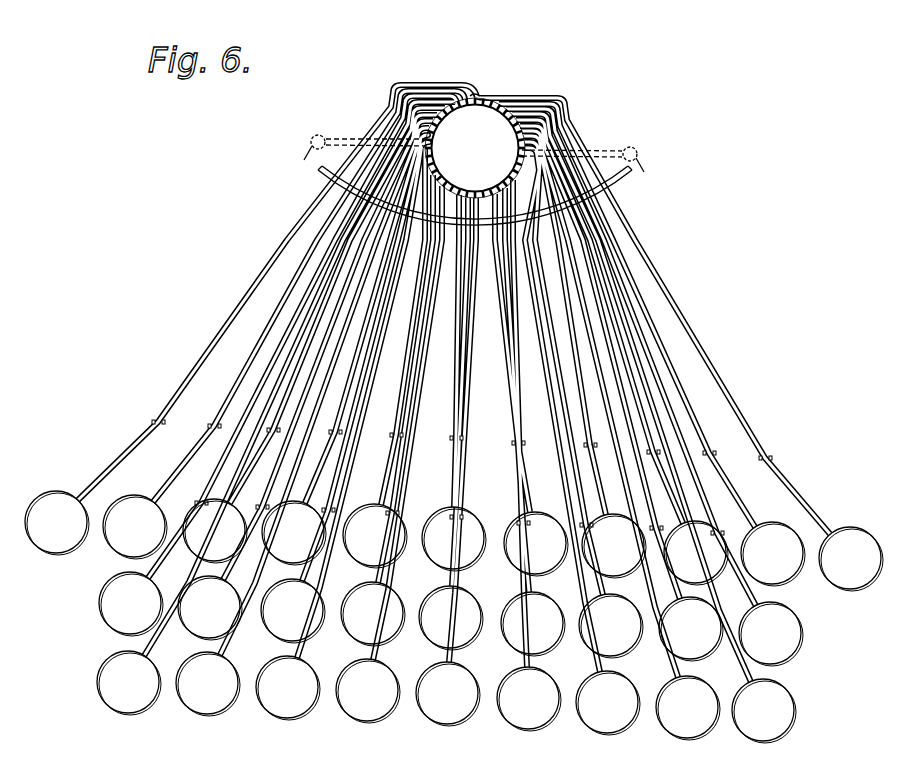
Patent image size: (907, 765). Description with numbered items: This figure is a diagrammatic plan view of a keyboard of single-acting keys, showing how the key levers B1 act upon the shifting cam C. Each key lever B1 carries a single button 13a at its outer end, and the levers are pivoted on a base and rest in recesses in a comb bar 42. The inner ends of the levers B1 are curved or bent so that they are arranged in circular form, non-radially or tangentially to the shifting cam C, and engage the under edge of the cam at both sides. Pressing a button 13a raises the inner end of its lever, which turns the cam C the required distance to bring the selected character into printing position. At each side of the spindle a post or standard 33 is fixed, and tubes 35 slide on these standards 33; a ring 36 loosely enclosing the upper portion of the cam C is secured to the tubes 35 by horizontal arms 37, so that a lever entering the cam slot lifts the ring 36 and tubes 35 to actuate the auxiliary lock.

The single-acting key lever B1 is at (722, 356).
The shifting cam C is at (514, 120).
The ring 36 is at (478, 93).
The comb bar 42 is at (368, 184).
The horizontal arms 37 is at (355, 138).
The tubes 35 is at (310, 139).
The post or standard 33 is at (312, 150).
The button 13a is at (454, 617).